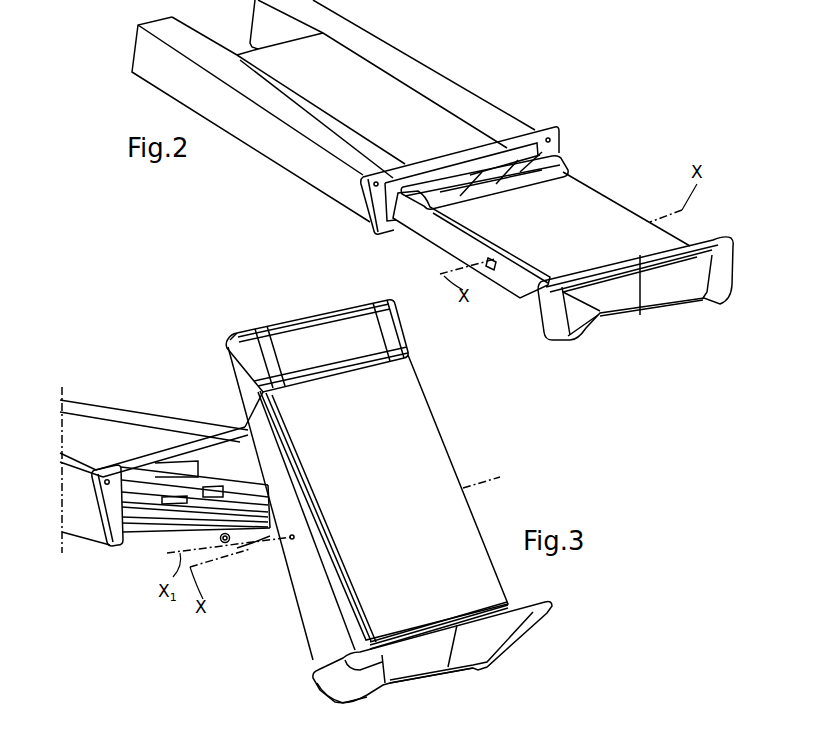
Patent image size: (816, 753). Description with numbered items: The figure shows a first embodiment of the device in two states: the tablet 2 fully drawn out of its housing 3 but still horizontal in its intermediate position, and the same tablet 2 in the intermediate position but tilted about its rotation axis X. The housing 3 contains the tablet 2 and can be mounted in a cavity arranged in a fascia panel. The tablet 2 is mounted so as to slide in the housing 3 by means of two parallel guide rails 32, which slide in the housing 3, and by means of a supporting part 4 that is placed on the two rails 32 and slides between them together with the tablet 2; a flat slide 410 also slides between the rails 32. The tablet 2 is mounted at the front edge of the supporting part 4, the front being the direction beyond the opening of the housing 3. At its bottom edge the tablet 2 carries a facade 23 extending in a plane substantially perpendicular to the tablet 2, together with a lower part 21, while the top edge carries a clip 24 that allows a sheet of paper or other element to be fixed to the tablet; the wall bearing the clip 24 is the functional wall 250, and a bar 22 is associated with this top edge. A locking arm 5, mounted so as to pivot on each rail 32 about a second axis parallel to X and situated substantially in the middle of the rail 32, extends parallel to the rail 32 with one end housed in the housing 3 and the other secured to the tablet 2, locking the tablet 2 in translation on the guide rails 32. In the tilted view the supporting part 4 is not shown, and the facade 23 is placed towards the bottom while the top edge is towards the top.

In FIG. 2, the tablet 2 is at (626, 211).
In FIG. 3, the tablet 2 is at (368, 503).
In FIG. 2, the housing 3 is at (273, 148).
In FIG. 3, the housing 3 is at (82, 520).
In FIG. 2, the supporting part 4 is at (393, 222).
In FIG. 3, the supporting part 4 is at (107, 505).
In FIG. 2, the locking arm 5 is at (471, 244).
In FIG. 3, the locking arm 5 is at (270, 487).
In FIG. 3, the lower frame part 21 is at (410, 684).
In FIG. 2, the cross bar 22 is at (560, 182).
In FIG. 3, the cross bar 22 is at (236, 339).
In FIG. 2, the facade 23 is at (673, 275).
In FIG. 3, the facade 23 is at (507, 637).
In FIG. 2, the clip 24 is at (557, 168).
In FIG. 3, the clip 24 is at (402, 341).
In FIG. 3, the guide rails 32 is at (143, 517).
In FIG. 2, the functional wall 250 is at (601, 250).
In FIG. 3, the functional wall 250 is at (425, 573).
In FIG. 3, the flat slide 410 is at (195, 492).